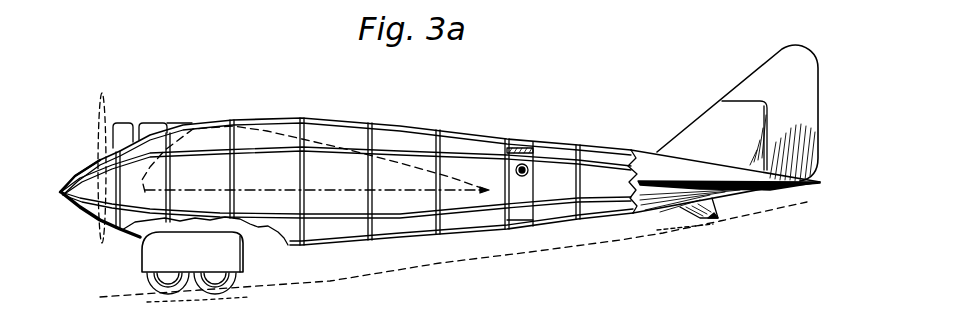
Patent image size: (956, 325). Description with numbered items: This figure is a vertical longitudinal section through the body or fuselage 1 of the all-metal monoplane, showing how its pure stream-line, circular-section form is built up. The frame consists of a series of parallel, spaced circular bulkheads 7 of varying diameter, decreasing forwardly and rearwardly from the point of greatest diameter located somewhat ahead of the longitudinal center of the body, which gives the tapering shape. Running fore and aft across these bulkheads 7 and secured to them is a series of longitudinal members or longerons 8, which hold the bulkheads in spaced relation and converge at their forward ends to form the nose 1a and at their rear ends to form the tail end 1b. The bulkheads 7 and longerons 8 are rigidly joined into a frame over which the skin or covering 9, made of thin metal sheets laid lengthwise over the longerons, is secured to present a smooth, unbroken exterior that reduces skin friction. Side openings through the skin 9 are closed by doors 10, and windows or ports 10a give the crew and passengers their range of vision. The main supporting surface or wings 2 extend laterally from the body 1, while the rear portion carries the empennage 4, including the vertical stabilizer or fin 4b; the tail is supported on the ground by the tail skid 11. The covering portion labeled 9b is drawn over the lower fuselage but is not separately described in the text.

The body or fuselage 1 is at (194, 125).
The nose 1a is at (63, 178).
The tail end 1b is at (765, 192).
The main supporting surface or wings 2 is at (258, 143).
The empennage 4 is at (737, 113).
The vertical stabilizer or fin 4b is at (761, 141).
The circular bulkheads 7 is at (441, 140).
The longitudinal members or longerons 8 is at (481, 153).
The skin or covering 9 is at (724, 181).
The gondola covering 9b is at (277, 240).
The doors 10 is at (522, 197).
The windows or ports 10a is at (68, 195).
The tail skid 11 is at (692, 217).